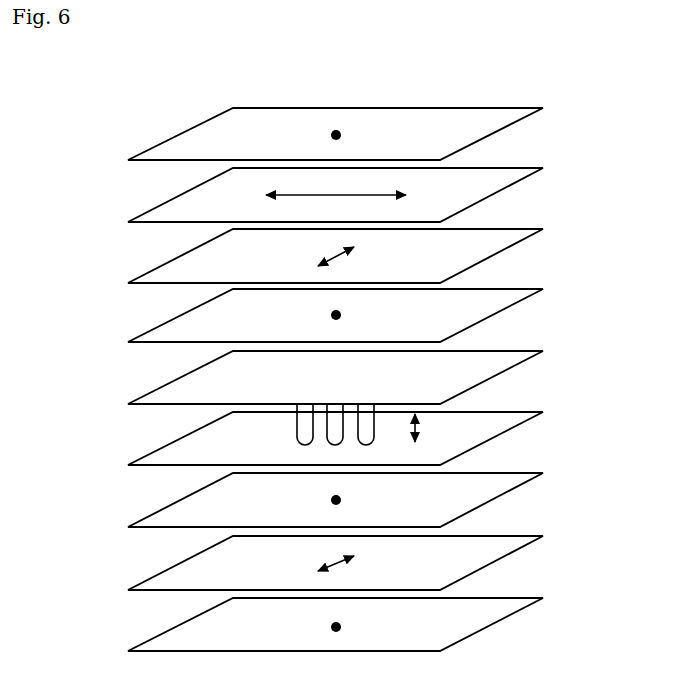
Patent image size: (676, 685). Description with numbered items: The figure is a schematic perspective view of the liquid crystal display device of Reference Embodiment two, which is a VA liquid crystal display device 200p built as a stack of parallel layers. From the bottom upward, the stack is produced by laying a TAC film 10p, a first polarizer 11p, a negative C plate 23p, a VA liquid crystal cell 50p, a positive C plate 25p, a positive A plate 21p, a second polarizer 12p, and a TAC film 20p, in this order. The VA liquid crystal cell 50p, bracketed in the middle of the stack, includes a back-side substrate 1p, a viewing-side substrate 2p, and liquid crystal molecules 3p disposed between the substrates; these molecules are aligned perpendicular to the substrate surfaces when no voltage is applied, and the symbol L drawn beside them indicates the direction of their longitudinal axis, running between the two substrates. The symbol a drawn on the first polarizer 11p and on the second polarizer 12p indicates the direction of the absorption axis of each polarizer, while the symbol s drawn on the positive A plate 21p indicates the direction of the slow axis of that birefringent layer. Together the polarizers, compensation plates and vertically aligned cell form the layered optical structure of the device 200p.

The VA liquid crystal display device 200p is at (604, 78).
The TAC film 20p is at (478, 128).
The second polarizer 12p is at (478, 188).
The positive A plate 21p is at (478, 250).
The positive C plate 25p is at (478, 312).
The VA liquid crystal cell 50p is at (548, 350).
The viewing-side substrate 2p is at (182, 387).
The liquid crystal molecules 3p is at (304, 426).
The back-side substrate 1p is at (172, 451).
The direction of the longitudinal axis of the liquid crystal molecules L is at (423, 426).
The negative C plate 23p is at (478, 494).
The first polarizer 11p is at (478, 560).
The TAC film 10p is at (478, 621).
The direction of the absorption axis of the polarizer a is at (262, 195).
The direction of the slow axis of the birefringent layer s is at (313, 268).